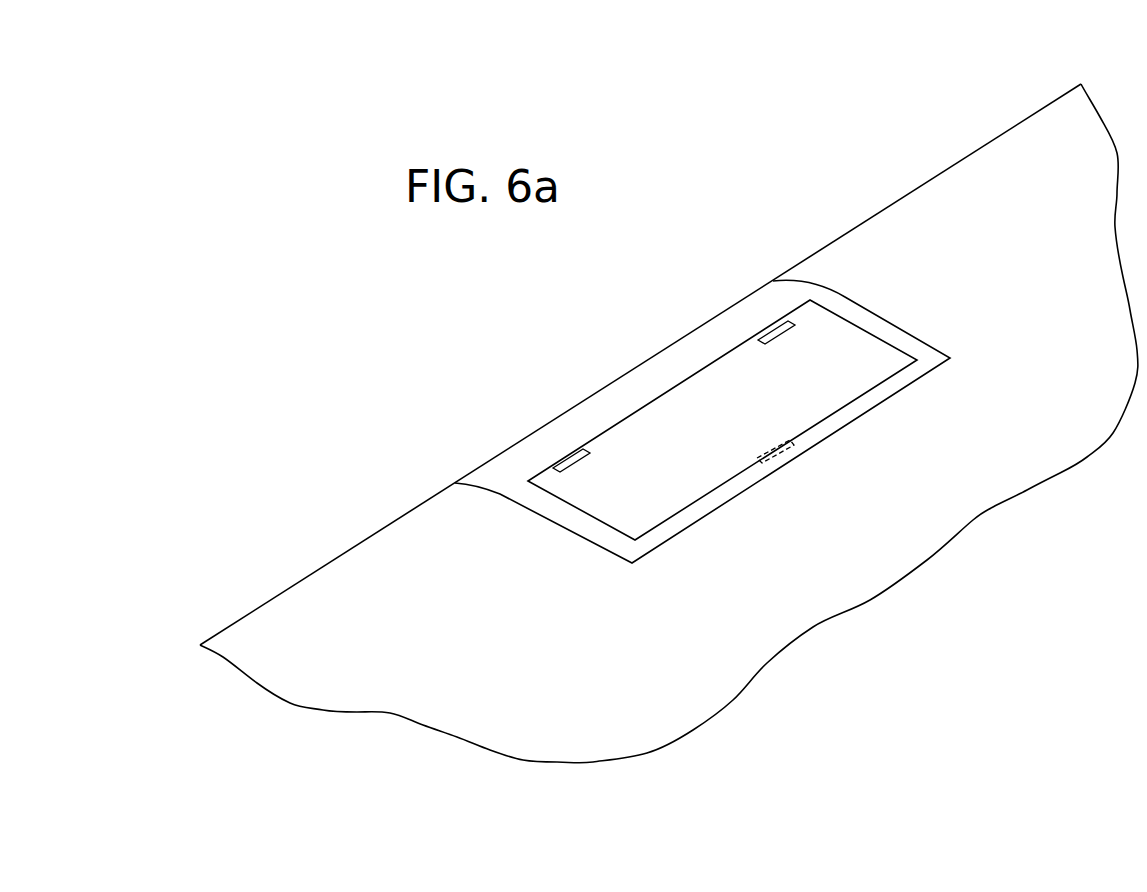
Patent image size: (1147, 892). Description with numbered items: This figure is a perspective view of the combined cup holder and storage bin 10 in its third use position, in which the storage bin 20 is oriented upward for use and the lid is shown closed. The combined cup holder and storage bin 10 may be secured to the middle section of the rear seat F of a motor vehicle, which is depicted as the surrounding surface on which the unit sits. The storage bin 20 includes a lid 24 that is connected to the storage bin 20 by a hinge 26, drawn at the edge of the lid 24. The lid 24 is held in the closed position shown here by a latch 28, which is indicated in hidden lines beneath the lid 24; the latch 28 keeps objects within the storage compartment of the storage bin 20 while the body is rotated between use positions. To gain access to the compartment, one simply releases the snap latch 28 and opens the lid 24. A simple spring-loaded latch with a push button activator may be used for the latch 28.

The combined cup holder and storage bin 10 is at (671, 374).
The storage bin 20 is at (527, 465).
The lid 24 is at (753, 390).
The hinge 26 is at (574, 450).
The latch 28 is at (763, 447).
The rear seat F is at (845, 575).